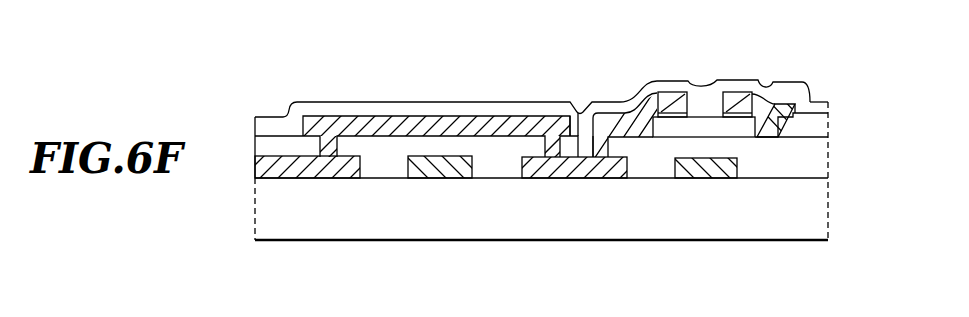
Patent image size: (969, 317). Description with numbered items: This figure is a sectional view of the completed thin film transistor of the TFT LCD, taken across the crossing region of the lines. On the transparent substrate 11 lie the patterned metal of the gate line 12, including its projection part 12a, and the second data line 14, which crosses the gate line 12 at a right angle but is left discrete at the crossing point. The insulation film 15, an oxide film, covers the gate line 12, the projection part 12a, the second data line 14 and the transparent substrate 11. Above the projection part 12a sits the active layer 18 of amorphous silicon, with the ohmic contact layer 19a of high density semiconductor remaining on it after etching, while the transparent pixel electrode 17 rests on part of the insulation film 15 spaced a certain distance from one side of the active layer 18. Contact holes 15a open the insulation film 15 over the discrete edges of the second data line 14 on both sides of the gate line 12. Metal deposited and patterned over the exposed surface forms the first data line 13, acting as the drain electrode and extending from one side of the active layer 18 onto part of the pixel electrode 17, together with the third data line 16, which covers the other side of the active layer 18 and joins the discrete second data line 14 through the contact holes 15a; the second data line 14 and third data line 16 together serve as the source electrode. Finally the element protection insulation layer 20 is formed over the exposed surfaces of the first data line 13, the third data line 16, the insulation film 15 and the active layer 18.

The transparent substrate 11 is at (817, 214).
The gate line 12 is at (437, 168).
The projection part 12a is at (702, 155).
The first data line 13 is at (767, 93).
The second data line 14 is at (328, 155).
The insulation film 15 is at (288, 142).
The contact hole 15a is at (563, 88).
The third data line 16 is at (363, 118).
The pixel electrode 17 is at (807, 130).
The active layer 18 is at (714, 87).
The ohmic contact layer 19a is at (662, 93).
The element protection insulation layer 20 is at (510, 110).